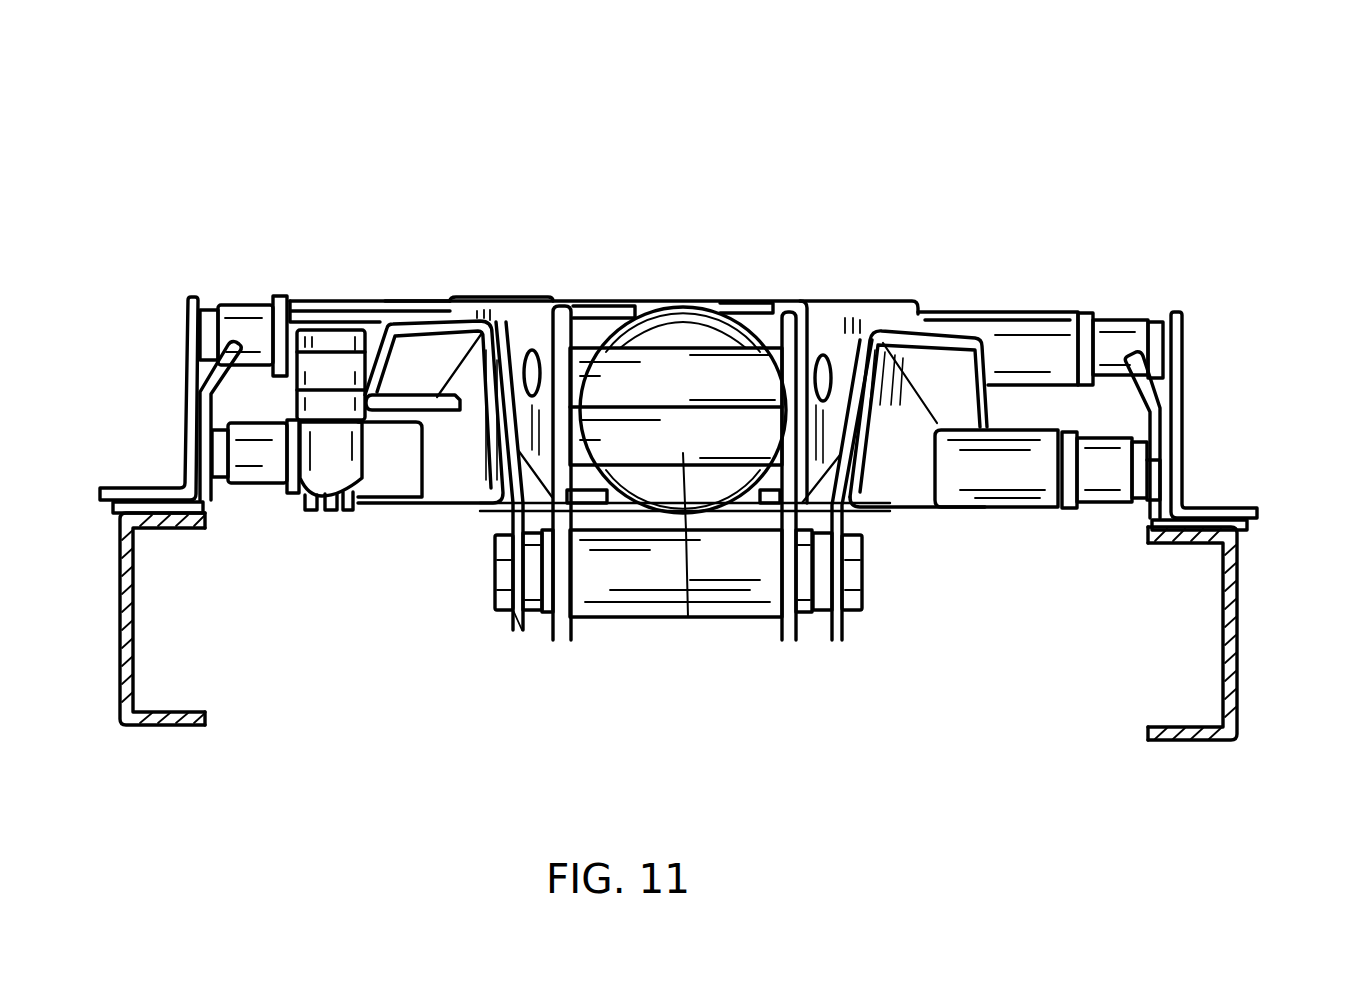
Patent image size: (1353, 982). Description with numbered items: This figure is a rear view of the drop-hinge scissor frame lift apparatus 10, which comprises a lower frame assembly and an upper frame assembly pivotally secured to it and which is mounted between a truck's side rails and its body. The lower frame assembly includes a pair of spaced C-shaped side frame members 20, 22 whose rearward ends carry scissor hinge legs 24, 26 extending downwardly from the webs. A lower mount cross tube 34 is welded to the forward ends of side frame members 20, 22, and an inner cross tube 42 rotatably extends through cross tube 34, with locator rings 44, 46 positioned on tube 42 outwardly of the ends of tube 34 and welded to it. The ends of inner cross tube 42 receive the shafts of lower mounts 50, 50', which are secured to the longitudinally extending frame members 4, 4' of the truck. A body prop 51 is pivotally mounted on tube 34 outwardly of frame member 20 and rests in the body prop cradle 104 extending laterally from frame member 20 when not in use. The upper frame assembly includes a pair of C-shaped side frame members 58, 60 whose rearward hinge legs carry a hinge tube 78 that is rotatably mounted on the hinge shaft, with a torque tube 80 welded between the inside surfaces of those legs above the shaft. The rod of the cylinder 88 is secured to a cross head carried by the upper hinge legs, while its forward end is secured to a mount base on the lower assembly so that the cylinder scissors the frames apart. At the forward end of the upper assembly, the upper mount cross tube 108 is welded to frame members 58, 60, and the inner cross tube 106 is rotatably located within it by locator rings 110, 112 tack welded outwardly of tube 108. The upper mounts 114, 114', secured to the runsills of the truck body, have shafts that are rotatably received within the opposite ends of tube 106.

The drop-hinge scissor frame lift apparatus 10 is at (805, 190).
The frame member 4 is at (125, 619).
The frame member 4' is at (1231, 633).
The lower mount 50 is at (118, 457).
The lower mount 50' is at (1243, 448).
The upper mount 114 is at (153, 386).
The upper mount 114' is at (1204, 370).
The locator ring 110 is at (282, 318).
The upper mount cross tube 108 is at (340, 312).
The body prop cradle 104 is at (407, 395).
The body prop 51 is at (343, 458).
The locator ring 44 is at (292, 497).
The side frame member 20 is at (430, 505).
The side frame member 22 is at (924, 514).
The side frame member 58 is at (582, 298).
The side frame member 60 is at (762, 306).
The cylinder 88 is at (678, 322).
The torque tube 80 is at (688, 619).
The hinge tube 78 is at (745, 620).
The scissor hinge leg 24 is at (520, 632).
The scissor hinge leg 26 is at (836, 642).
The lower mount cross tube 34 is at (1020, 490).
The locator ring 46 is at (1070, 512).
The inner cross tube 42 is at (1100, 484).
The inner cross tube 106 is at (1128, 330).
The locator ring 112 is at (1085, 315).